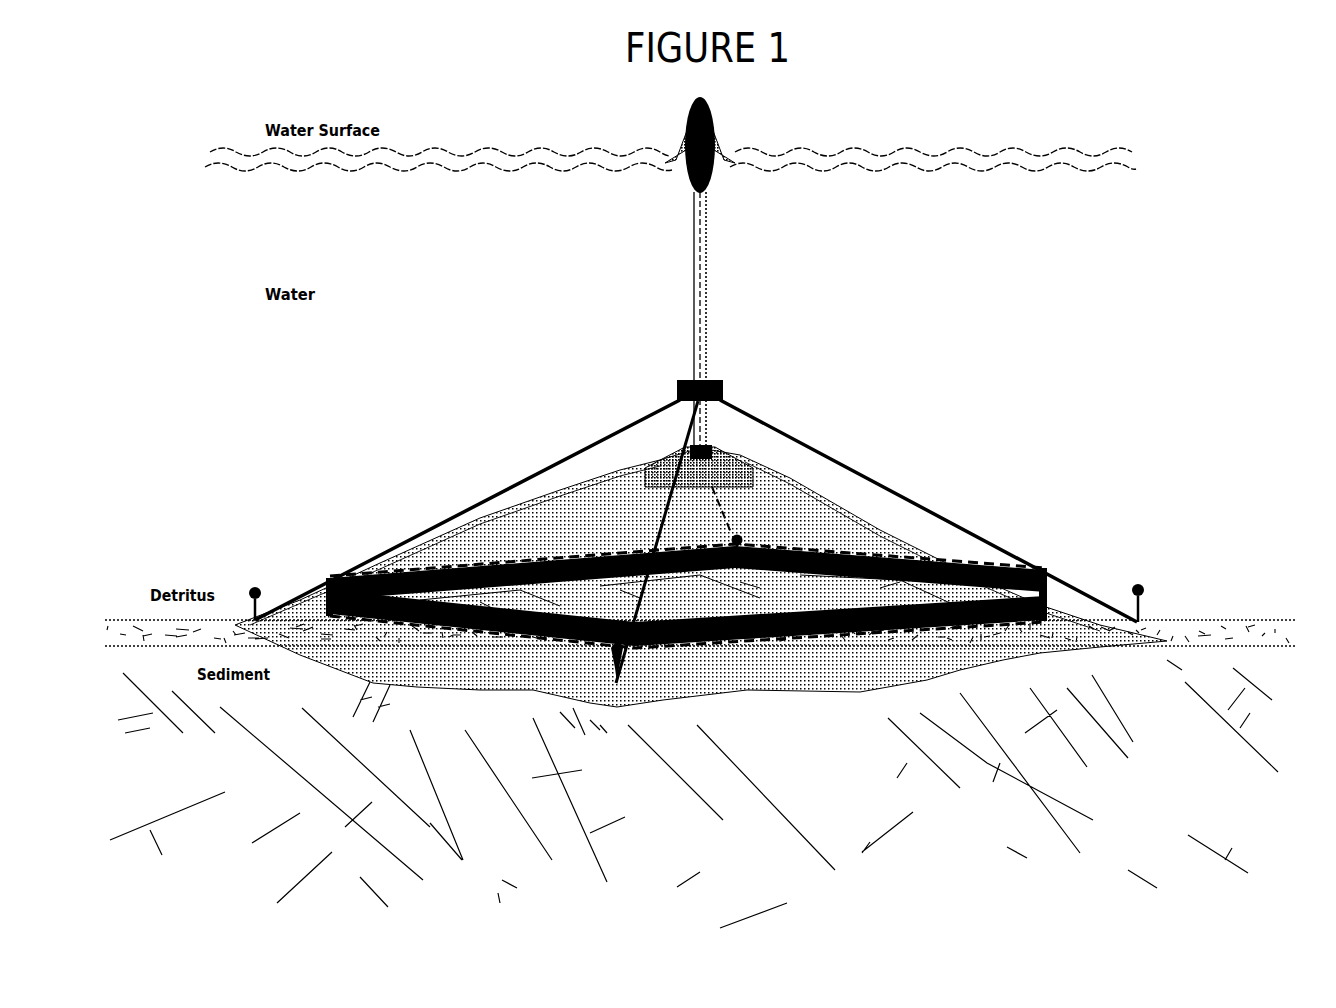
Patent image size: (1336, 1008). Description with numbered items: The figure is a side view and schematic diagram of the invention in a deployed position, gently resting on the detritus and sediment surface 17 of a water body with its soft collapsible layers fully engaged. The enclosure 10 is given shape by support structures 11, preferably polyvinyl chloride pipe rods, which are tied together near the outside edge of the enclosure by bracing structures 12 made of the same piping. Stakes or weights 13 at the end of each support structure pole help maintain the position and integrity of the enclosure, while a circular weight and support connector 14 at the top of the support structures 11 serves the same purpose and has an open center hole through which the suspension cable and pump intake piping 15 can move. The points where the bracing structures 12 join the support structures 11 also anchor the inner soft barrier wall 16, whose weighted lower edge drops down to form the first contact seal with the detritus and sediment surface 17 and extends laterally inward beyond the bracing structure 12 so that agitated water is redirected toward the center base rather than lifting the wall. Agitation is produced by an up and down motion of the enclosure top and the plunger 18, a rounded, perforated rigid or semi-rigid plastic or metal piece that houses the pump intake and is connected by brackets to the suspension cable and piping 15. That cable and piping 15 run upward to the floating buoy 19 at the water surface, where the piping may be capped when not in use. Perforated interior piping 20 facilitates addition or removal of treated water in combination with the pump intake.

The enclosure 10 is at (457, 673).
The support structures 11 is at (668, 507).
The bracing structures 12 is at (890, 557).
The stakes or weights 13 is at (1143, 602).
The circular weight and support connector 14 is at (727, 386).
The suspension cable and pump intake piping 15 is at (712, 298).
The soft barrier wall 16 is at (932, 570).
The detritus and sediment surface 17 is at (202, 632).
The plunger 18 is at (608, 515).
The floating buoy 19 is at (716, 122).
The perforated interior piping 20 is at (703, 640).